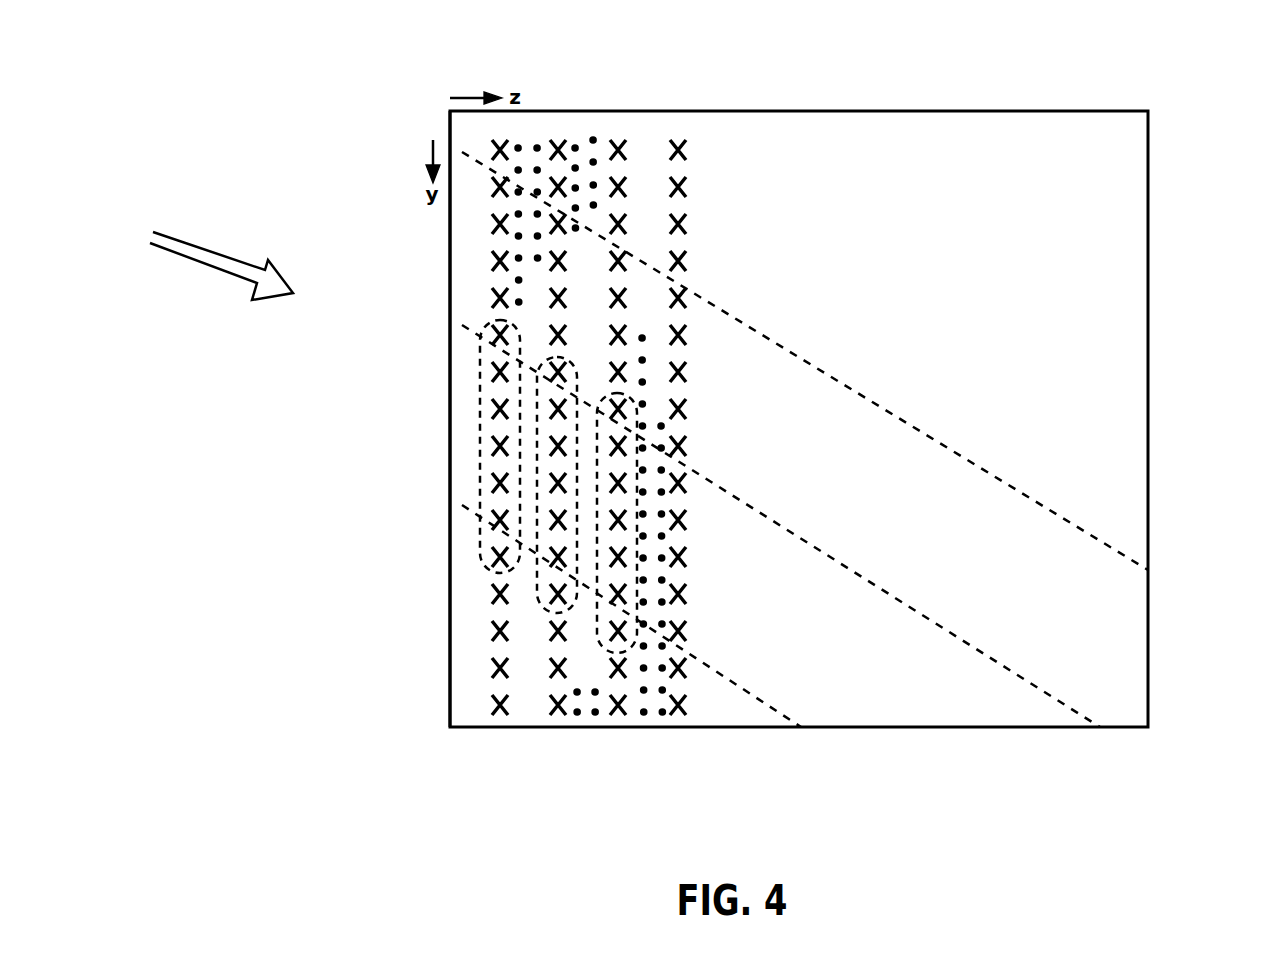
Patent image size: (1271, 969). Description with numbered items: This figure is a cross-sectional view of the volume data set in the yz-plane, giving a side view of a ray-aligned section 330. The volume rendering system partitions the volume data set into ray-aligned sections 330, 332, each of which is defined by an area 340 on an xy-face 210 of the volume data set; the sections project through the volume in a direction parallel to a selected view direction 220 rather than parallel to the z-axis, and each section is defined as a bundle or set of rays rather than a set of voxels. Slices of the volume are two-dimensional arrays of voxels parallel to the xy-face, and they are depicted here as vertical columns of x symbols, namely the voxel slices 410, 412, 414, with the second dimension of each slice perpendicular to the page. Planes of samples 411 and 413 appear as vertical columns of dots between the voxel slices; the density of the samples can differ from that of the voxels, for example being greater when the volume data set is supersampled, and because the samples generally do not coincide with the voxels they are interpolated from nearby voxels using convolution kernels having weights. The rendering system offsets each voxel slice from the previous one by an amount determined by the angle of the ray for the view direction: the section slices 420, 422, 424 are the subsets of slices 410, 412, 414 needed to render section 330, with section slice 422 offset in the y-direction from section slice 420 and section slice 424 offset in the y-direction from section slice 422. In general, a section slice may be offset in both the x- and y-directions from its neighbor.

The xy-face 210 is at (436, 327).
The selected view direction 220 is at (221, 271).
The ray-aligned section 330 is at (950, 706).
The ray-aligned section 332 is at (1112, 658).
The area 340 is at (430, 471).
The voxel slice 410 is at (524, 127).
The plane of samples 411 is at (603, 748).
The voxel slice 412 is at (586, 117).
The plane of samples 413 is at (678, 747).
The voxel slice 414 is at (648, 118).
The section slice 420 is at (466, 579).
The section slice 422 is at (512, 602).
The section slice 424 is at (592, 661).